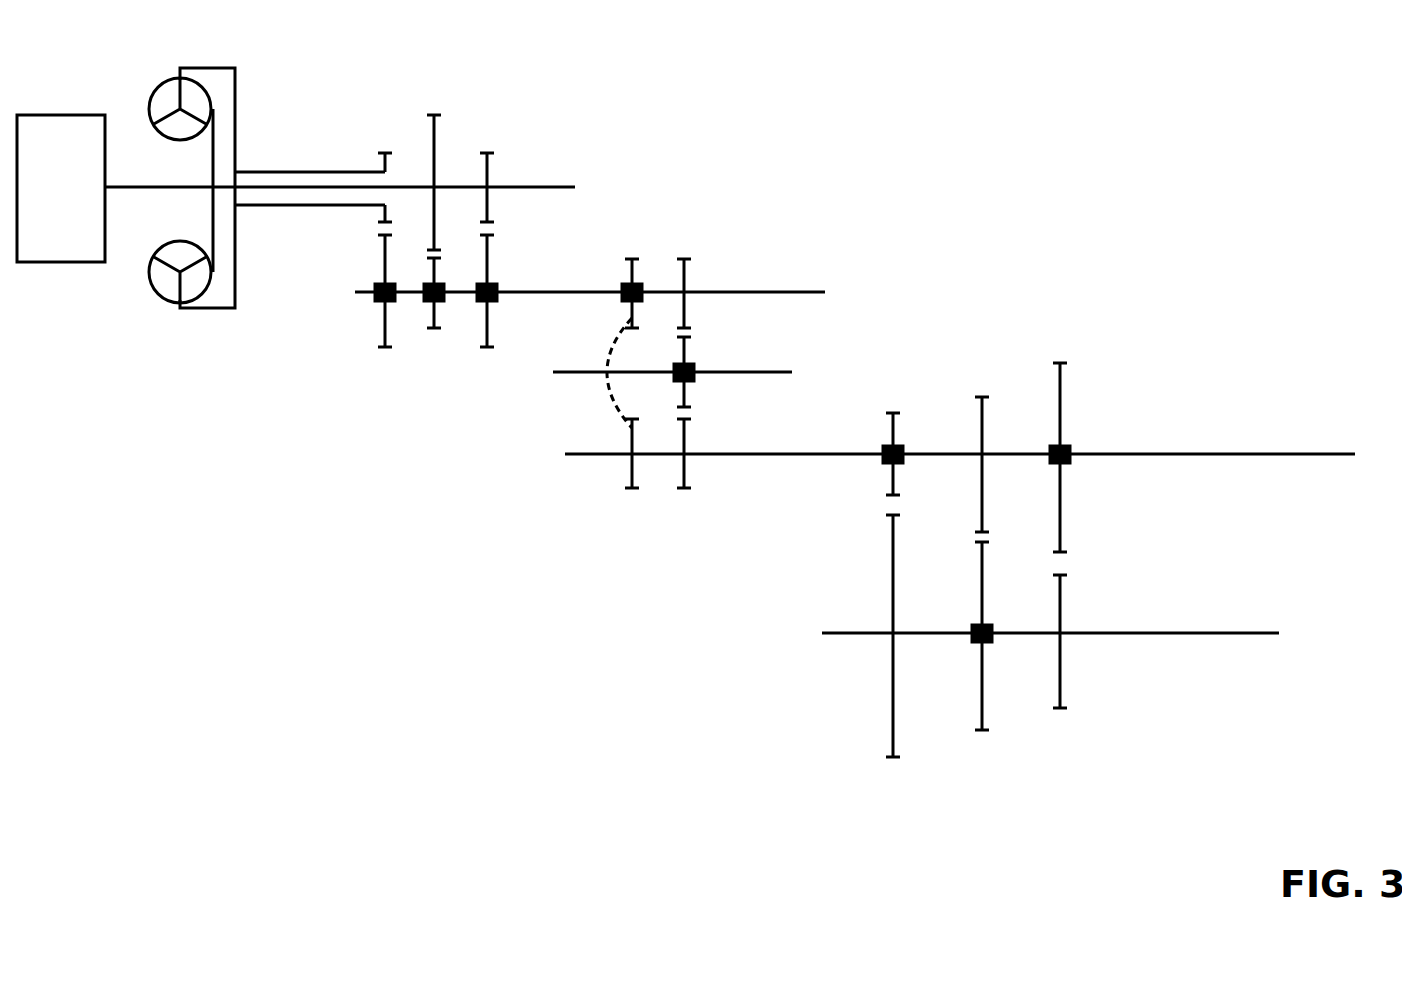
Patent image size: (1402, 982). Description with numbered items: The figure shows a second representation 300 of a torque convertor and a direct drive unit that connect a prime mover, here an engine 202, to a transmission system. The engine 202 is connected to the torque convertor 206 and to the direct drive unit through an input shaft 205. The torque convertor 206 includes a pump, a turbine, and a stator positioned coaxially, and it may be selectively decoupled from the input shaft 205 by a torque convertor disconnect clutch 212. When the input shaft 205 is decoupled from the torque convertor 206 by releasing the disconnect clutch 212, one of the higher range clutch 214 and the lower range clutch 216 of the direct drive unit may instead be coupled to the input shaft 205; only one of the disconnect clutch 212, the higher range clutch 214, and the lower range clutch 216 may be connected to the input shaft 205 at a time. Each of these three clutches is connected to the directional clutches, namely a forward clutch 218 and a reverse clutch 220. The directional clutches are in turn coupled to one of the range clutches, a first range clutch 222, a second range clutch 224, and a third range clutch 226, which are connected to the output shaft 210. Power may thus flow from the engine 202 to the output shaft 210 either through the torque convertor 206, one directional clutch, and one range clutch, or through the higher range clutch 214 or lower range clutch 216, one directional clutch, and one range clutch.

The second representation 300 is at (1267, 83).
The engine 202 is at (43, 198).
The torque convertor 206 is at (159, 331).
The input shaft 205 is at (534, 186).
The torque convertor disconnect clutch 212 is at (370, 311).
The higher range clutch 214 is at (433, 356).
The lower range clutch 216 is at (495, 318).
The forward clutch 218 is at (647, 249).
The reverse clutch 220 is at (710, 392).
The first range clutch 222 is at (913, 468).
The second range clutch 224 is at (996, 643).
The third range clutch 226 is at (1088, 468).
The output shaft 210 is at (1230, 633).